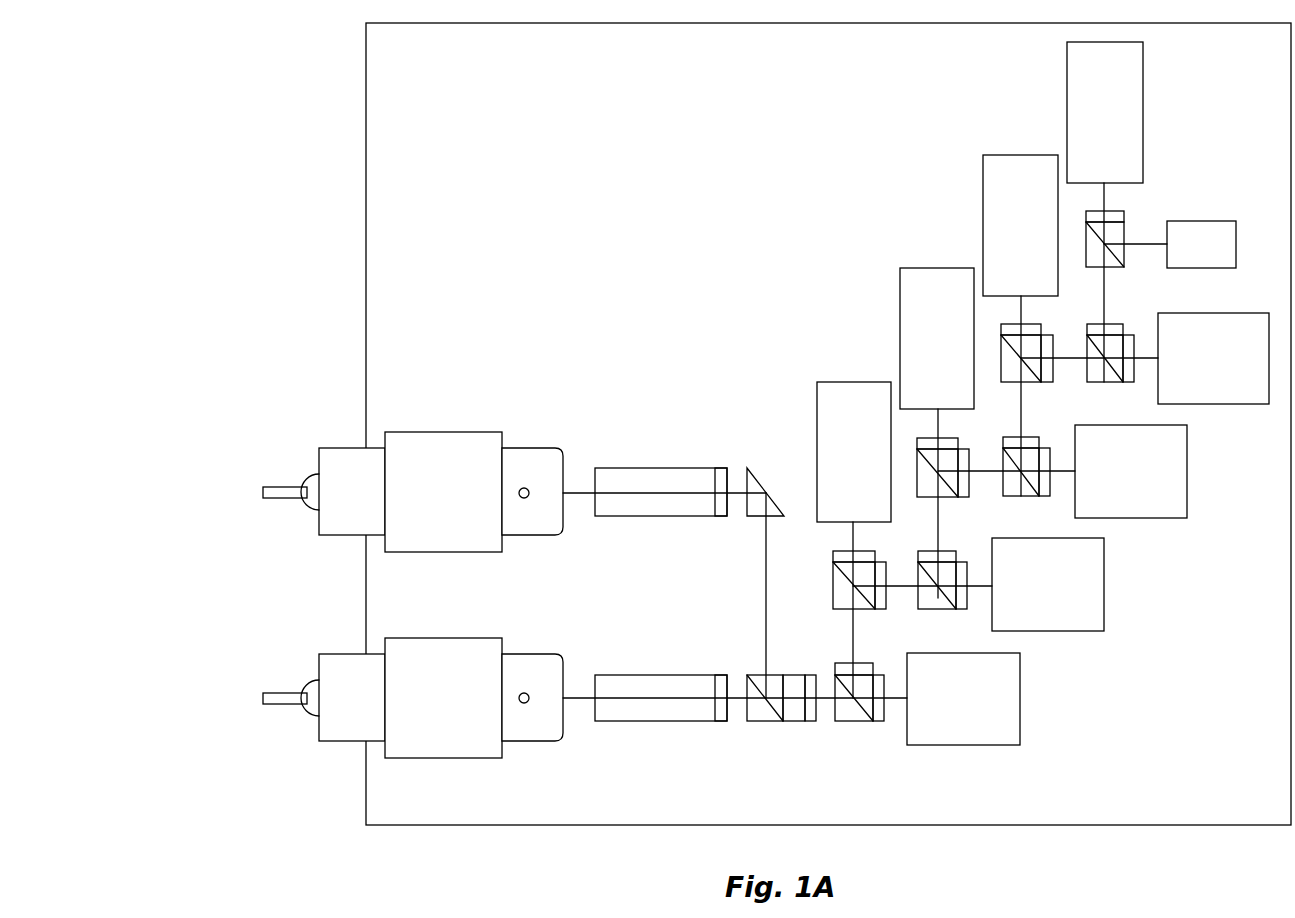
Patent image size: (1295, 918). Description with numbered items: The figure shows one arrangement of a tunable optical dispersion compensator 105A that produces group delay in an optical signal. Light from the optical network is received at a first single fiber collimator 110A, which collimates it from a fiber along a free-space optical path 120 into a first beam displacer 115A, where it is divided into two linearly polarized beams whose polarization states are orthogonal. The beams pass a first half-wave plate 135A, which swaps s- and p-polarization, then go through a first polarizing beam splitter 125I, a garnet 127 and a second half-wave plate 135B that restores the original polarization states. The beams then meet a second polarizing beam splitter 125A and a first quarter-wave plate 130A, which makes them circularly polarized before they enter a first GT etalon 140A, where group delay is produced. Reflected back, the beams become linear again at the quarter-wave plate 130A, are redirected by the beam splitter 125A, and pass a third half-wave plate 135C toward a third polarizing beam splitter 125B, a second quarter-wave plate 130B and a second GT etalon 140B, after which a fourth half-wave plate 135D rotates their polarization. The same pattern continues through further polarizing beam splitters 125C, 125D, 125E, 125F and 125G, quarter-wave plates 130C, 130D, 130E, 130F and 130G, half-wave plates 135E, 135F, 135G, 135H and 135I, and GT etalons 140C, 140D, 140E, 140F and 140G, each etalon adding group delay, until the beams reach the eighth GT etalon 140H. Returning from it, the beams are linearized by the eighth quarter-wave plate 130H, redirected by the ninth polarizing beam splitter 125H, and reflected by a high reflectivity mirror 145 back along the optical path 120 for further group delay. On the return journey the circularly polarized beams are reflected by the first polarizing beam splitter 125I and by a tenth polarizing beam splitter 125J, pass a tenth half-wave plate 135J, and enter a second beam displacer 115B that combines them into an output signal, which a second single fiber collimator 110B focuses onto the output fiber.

The tunable optical dispersion compensator 105A is at (285, 152).
The first single fiber collimator 110A is at (413, 698).
The second single fiber collimator 110B is at (413, 492).
The first beam displacer 115A is at (680, 722).
The second beam displacer 115B is at (680, 518).
The optical path 120 is at (580, 478).
The second polarizing beam splitter 125A is at (853, 722).
The third polarizing beam splitter 125B is at (832, 586).
The polarizing beam splitter 125C is at (932, 610).
The polarizing beam splitter 125D is at (938, 498).
The polarizing beam splitter 125E is at (1018, 497).
The polarizing beam splitter 125F is at (1031, 384).
The polarizing beam splitter 125G is at (1107, 384).
The ninth polarizing beam splitter 125H is at (1113, 268).
The first polarizing beam splitter 125I is at (765, 722).
The tenth polarizing beam splitter 125J is at (757, 470).
The garnet 127 is at (794, 669).
The first quarter-wave plate 130A is at (889, 724).
The second quarter-wave plate 130B is at (841, 552).
The quarter-wave plate 130C is at (971, 572).
The quarter-wave plate 130D is at (940, 436).
The quarter-wave plate 130E is at (1053, 460).
The quarter-wave plate 130F is at (1025, 322).
The quarter-wave plate 130G is at (1138, 345).
The eighth quarter-wave plate 130H is at (1113, 208).
The first half-wave plate 135A is at (720, 670).
The second half-wave plate 135B is at (823, 724).
The third half-wave plate 135C is at (861, 662).
The fourth half-wave plate 135D is at (891, 578).
The half-wave plate 135E is at (931, 549).
The half-wave plate 135F is at (976, 463).
The half-wave plate 135G is at (1017, 436).
The half-wave plate 135H is at (1056, 347).
The half-wave plate 135I is at (1100, 322).
The tenth half-wave plate 135J is at (720, 464).
The first GT etalon 140A is at (963, 699).
The second GT etalon 140B is at (854, 452).
The GT etalon 140C is at (1048, 584).
The GT etalon 140D is at (937, 338).
The GT etalon 140E is at (1131, 471).
The GT etalon 140F is at (1020, 225).
The GT etalon 140G is at (1213, 358).
The eighth GT etalon 140H is at (1105, 112).
The high reflectivity mirror 145 is at (1201, 244).